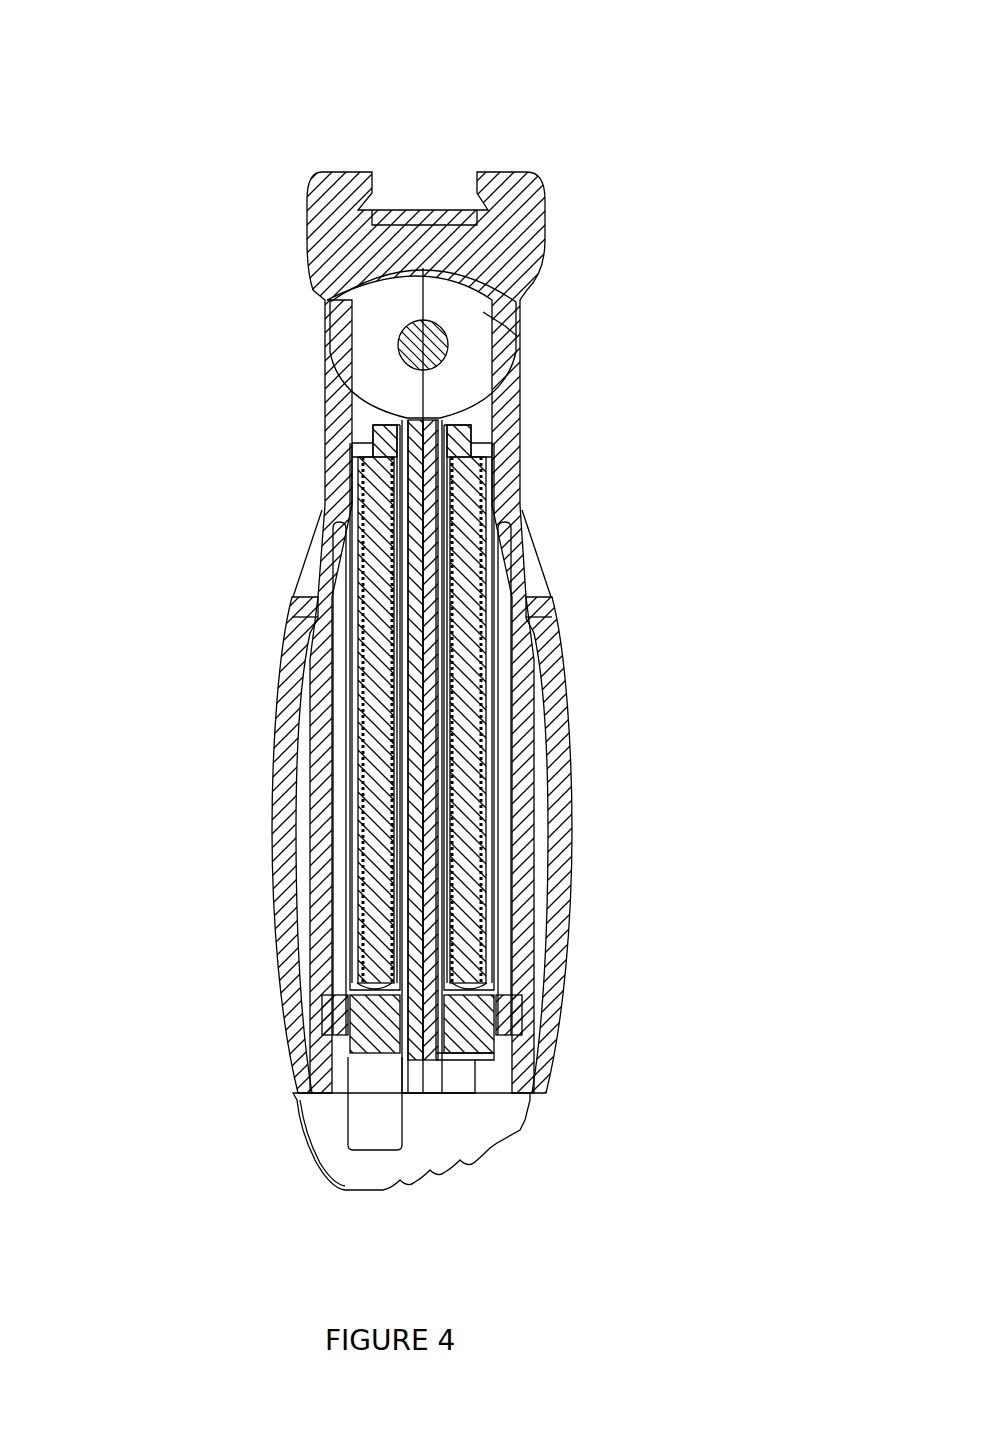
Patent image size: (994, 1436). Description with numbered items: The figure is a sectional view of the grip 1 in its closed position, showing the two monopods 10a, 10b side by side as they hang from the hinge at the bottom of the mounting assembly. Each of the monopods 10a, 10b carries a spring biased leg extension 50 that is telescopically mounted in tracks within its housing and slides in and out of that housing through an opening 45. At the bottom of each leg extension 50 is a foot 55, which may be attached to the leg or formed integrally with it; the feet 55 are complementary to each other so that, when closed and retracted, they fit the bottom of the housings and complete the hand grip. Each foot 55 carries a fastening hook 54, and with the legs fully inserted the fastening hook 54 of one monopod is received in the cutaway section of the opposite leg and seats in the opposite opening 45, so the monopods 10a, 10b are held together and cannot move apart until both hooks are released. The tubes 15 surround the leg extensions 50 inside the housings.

The grip 1 is at (421, 620).
The monopod 10a is at (562, 755).
The monopod 10b is at (270, 797).
The tube 15 is at (348, 440).
The leg extension 50 is at (387, 577).
The opening 45 is at (490, 1062).
The fastening hook 54 is at (455, 1078).
The foot 55 is at (322, 1122).